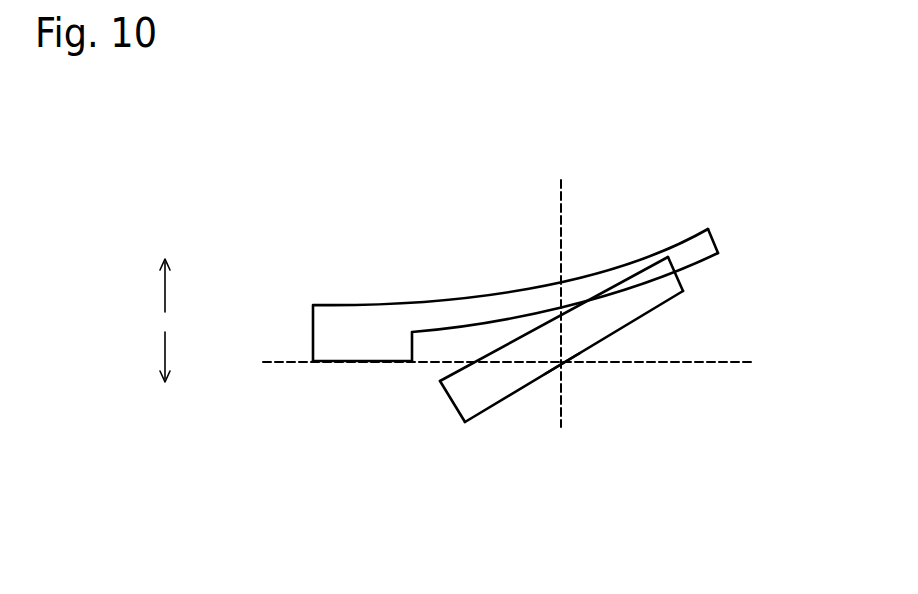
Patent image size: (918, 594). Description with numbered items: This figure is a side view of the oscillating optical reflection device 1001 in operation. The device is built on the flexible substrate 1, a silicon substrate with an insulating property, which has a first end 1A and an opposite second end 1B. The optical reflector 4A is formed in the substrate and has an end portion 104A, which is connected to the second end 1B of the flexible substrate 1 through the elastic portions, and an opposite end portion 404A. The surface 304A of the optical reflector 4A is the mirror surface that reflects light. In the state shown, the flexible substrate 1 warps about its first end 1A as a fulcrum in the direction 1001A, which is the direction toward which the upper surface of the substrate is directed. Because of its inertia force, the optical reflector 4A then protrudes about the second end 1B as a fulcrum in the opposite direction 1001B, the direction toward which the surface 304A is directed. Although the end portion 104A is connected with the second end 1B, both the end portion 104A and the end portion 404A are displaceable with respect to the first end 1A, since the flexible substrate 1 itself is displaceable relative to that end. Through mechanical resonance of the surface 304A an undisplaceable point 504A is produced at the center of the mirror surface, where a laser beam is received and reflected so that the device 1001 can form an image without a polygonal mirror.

The flexible substrate 1 is at (519, 329).
The first end 1A is at (365, 352).
The second end 1B is at (708, 238).
The optical reflector 4A is at (583, 317).
The end portion 104A is at (678, 270).
The surface 304A is at (647, 313).
The end portion 404A is at (453, 398).
The undisplaceable point 504A is at (562, 363).
The optical reflection device 1001 is at (592, 253).
The direction 1001A is at (165, 285).
The direction 1001B is at (165, 352).